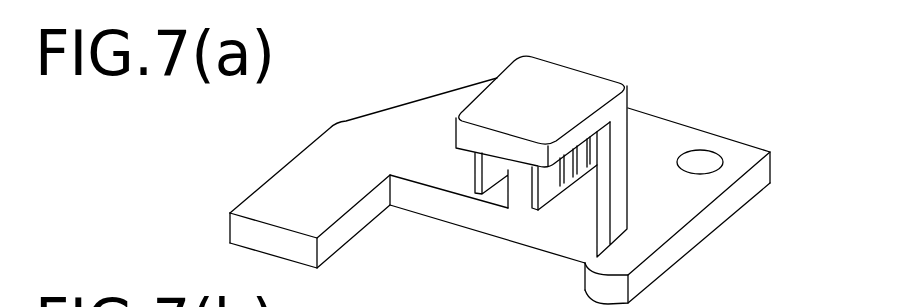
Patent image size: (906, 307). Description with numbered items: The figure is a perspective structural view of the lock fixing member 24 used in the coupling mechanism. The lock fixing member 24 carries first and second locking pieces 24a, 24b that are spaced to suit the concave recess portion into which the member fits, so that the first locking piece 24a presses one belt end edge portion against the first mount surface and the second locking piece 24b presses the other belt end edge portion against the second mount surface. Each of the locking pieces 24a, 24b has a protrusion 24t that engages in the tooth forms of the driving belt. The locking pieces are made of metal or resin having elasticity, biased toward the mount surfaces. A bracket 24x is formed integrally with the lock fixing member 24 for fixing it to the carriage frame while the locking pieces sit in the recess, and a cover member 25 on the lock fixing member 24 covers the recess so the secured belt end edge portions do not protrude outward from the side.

The lock fixing member 24 is at (620, 148).
The bracket 24x is at (380, 133).
The cover member 25 is at (520, 100).
The first locking piece 24a is at (515, 168).
The second locking piece 24b is at (533, 182).
The protrusion 24t is at (575, 187).